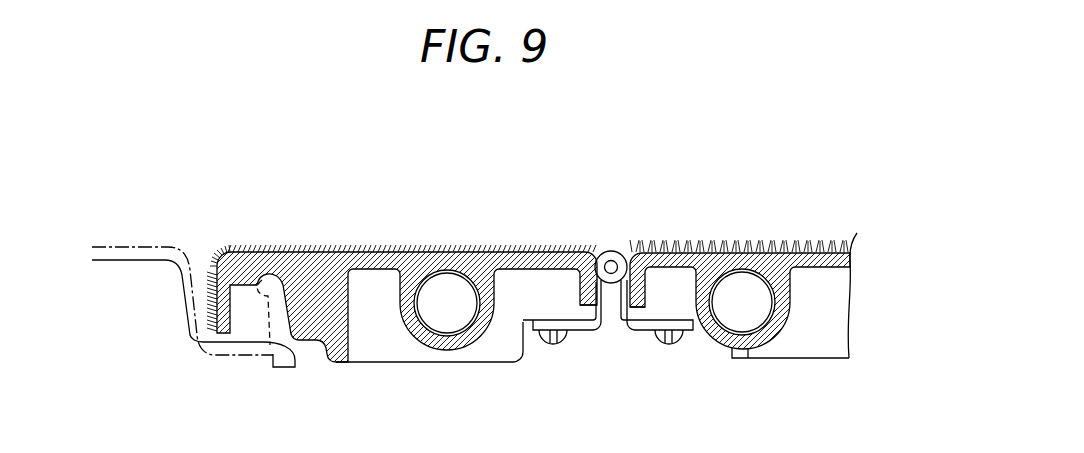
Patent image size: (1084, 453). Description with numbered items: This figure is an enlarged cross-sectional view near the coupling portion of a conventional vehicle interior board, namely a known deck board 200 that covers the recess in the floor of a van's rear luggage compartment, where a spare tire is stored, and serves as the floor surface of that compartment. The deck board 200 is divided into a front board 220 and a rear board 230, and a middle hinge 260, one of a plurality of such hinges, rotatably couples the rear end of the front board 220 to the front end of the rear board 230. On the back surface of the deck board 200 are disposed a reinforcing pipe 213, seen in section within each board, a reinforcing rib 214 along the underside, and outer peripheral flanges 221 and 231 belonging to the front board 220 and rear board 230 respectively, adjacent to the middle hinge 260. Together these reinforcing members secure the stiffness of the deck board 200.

The deck board 200 is at (826, 180).
The reinforcing pipe 213 is at (463, 348).
The reinforcing rib 214 is at (397, 363).
The front board 220 is at (368, 237).
The outer peripheral flange 221 is at (582, 297).
The rear board 230 is at (708, 230).
The outer peripheral flange 231 is at (637, 298).
The middle hinge 260 is at (610, 251).